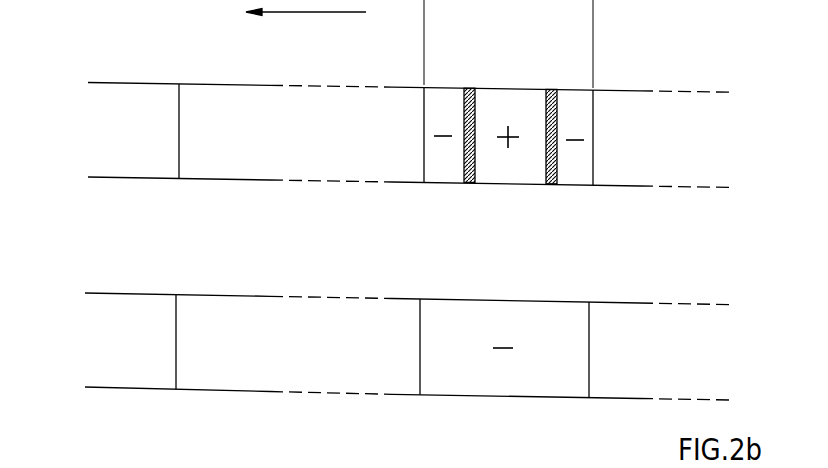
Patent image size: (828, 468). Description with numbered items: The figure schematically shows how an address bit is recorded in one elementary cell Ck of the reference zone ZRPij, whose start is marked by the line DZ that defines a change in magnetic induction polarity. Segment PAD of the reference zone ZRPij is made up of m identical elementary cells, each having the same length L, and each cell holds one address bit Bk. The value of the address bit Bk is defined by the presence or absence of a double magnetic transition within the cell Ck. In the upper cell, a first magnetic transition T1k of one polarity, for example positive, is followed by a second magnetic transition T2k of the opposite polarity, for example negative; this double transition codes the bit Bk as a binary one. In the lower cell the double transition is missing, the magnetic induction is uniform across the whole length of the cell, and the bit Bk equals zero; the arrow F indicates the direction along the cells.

The start line of reference zone DZ is at (179, 175).
The reference zone ZRPij is at (181, 84).
The elementary cell Ck is at (591, 56).
The first magnetic transition T1k is at (476, 121).
The second magnetic transition T2k is at (558, 122).
The cell length L is at (593, 15).
The address bit Bk is at (517, 330).
The scanning direction F is at (306, 8).